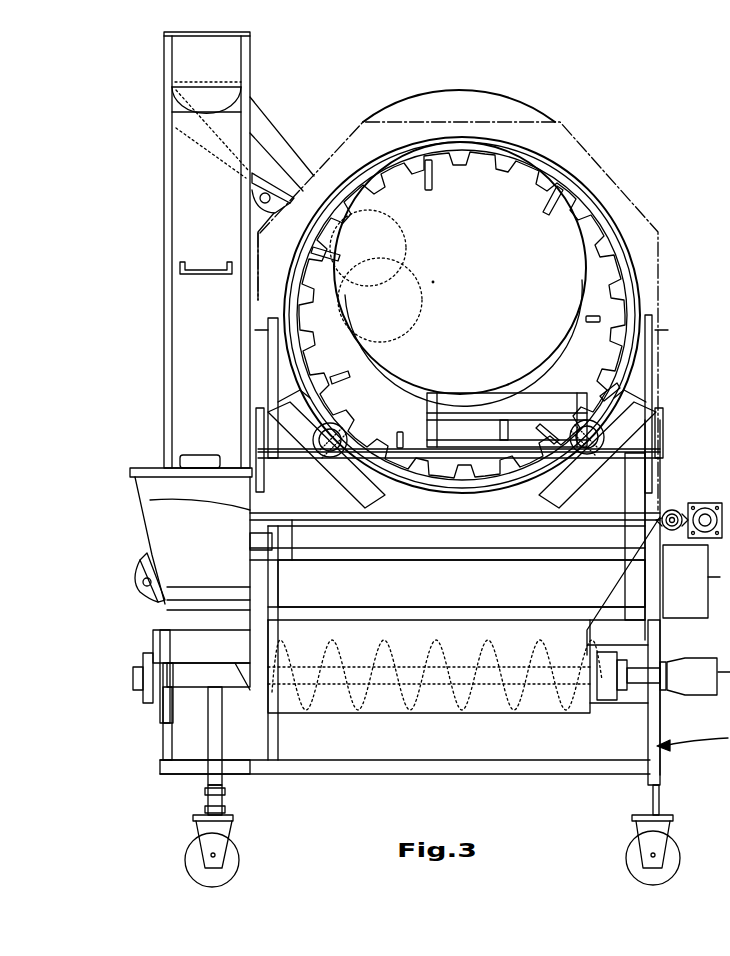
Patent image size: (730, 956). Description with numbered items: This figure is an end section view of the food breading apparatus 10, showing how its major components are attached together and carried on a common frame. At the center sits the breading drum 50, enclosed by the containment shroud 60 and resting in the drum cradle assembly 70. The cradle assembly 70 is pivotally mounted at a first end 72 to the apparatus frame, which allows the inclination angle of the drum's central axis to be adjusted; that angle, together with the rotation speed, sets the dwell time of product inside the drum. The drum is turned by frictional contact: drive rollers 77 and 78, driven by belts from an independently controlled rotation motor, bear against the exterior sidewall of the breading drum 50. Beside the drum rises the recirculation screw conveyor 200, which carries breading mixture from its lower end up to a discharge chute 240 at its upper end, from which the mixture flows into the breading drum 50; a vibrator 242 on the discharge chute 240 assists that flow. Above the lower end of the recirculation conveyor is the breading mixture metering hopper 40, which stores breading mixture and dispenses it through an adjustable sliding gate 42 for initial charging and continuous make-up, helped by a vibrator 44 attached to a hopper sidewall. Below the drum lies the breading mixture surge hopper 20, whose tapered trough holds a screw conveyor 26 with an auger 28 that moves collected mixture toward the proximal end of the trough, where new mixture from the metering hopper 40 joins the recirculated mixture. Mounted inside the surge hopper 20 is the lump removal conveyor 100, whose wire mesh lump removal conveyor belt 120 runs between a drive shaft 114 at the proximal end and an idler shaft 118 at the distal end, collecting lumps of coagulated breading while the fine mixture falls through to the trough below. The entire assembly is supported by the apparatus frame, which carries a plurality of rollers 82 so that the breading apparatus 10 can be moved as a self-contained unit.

The food breading apparatus 10 is at (618, 103).
The breading mixture surge hopper 20 is at (349, 708).
The screw conveyor 26 is at (409, 668).
The auger 28 is at (488, 705).
The breading mixture metering hopper 40 is at (208, 529).
The adjustable sliding gate 42 is at (200, 597).
The vibrator 44 is at (136, 582).
The breading drum 50 is at (494, 94).
The containment shroud 60 is at (632, 197).
The drum cradle assembly 70 is at (633, 442).
The first end 72 is at (268, 536).
The drive roller 77 is at (600, 430).
The drive roller 78 is at (322, 430).
The rollers 82 is at (230, 873).
The lump removal conveyor 100 is at (428, 527).
The drive shaft 114 is at (672, 506).
The idler shaft 118 is at (250, 510).
The lump removal conveyor belt 120 is at (461, 583).
The recirculation screw conveyor 200 is at (164, 247).
The discharge chute 240 is at (284, 128).
The vibrator 242 is at (262, 206).